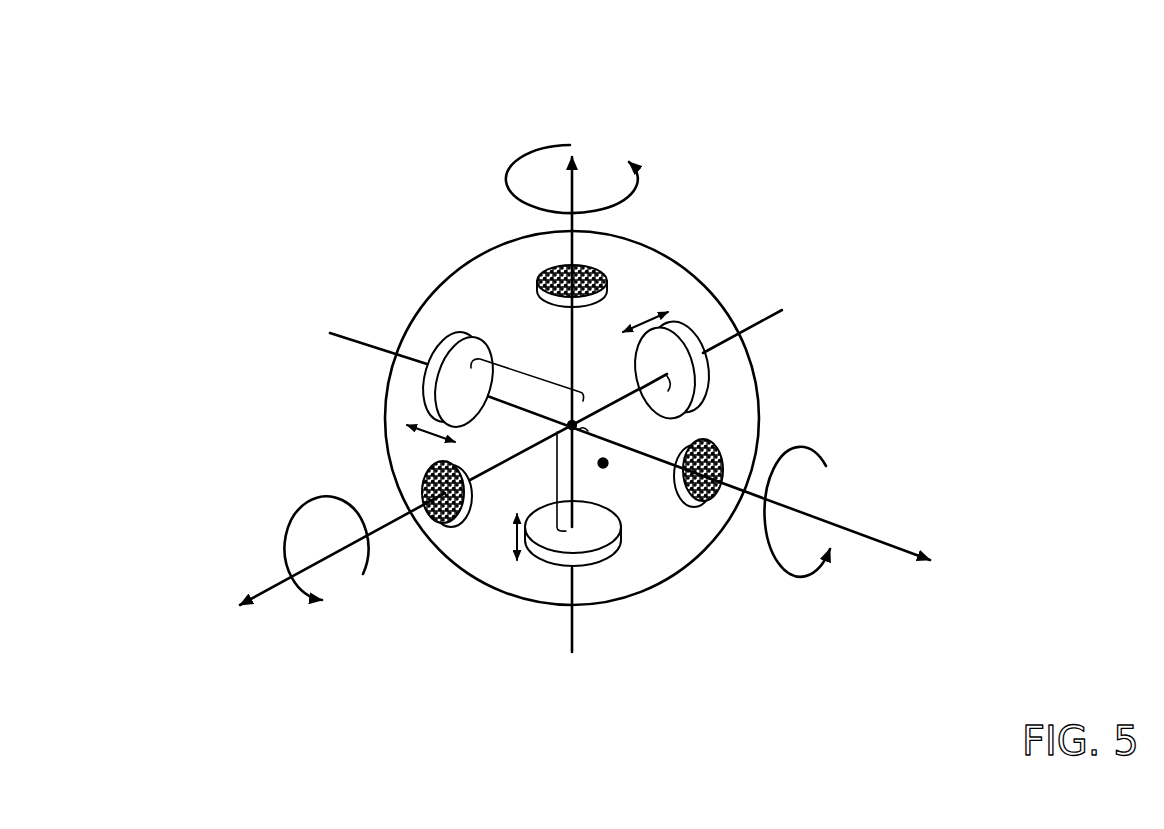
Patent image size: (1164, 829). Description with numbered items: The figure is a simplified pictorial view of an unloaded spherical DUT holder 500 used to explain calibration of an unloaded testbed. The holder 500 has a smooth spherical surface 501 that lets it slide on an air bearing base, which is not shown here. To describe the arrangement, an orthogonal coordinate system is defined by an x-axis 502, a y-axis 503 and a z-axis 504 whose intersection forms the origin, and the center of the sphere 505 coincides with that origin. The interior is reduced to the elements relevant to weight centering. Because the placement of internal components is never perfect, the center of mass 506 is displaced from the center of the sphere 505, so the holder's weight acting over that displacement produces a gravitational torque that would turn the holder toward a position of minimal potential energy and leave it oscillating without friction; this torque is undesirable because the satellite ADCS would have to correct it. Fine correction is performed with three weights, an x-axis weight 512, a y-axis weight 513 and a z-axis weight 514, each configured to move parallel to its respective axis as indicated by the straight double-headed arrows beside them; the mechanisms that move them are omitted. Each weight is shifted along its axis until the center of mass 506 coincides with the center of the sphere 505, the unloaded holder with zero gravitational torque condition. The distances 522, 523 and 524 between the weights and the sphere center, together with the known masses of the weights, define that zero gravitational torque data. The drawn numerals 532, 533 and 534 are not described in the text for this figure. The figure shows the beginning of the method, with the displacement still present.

The unloaded spherical DUT holder 500 is at (809, 186).
The smooth spherical surface 501 is at (412, 318).
The x-axis 502 is at (280, 580).
The y-axis 503 is at (887, 540).
The z-axis 504 is at (568, 193).
The center of the sphere 505 is at (572, 425).
The center of mass 506 is at (603, 463).
The x-axis weight 512 is at (703, 404).
The y-axis weight 513 is at (427, 397).
The z-axis weight 514 is at (552, 562).
The distance between x-axis weight and center of the sphere 522 is at (637, 413).
The distance between y-axis weight and center of the sphere 523 is at (510, 360).
The distance between z-axis weight and center of the sphere 524 is at (557, 486).
The movable mass 532 is at (428, 482).
The movable mass 533 is at (707, 463).
The movable mass 534 is at (593, 277).